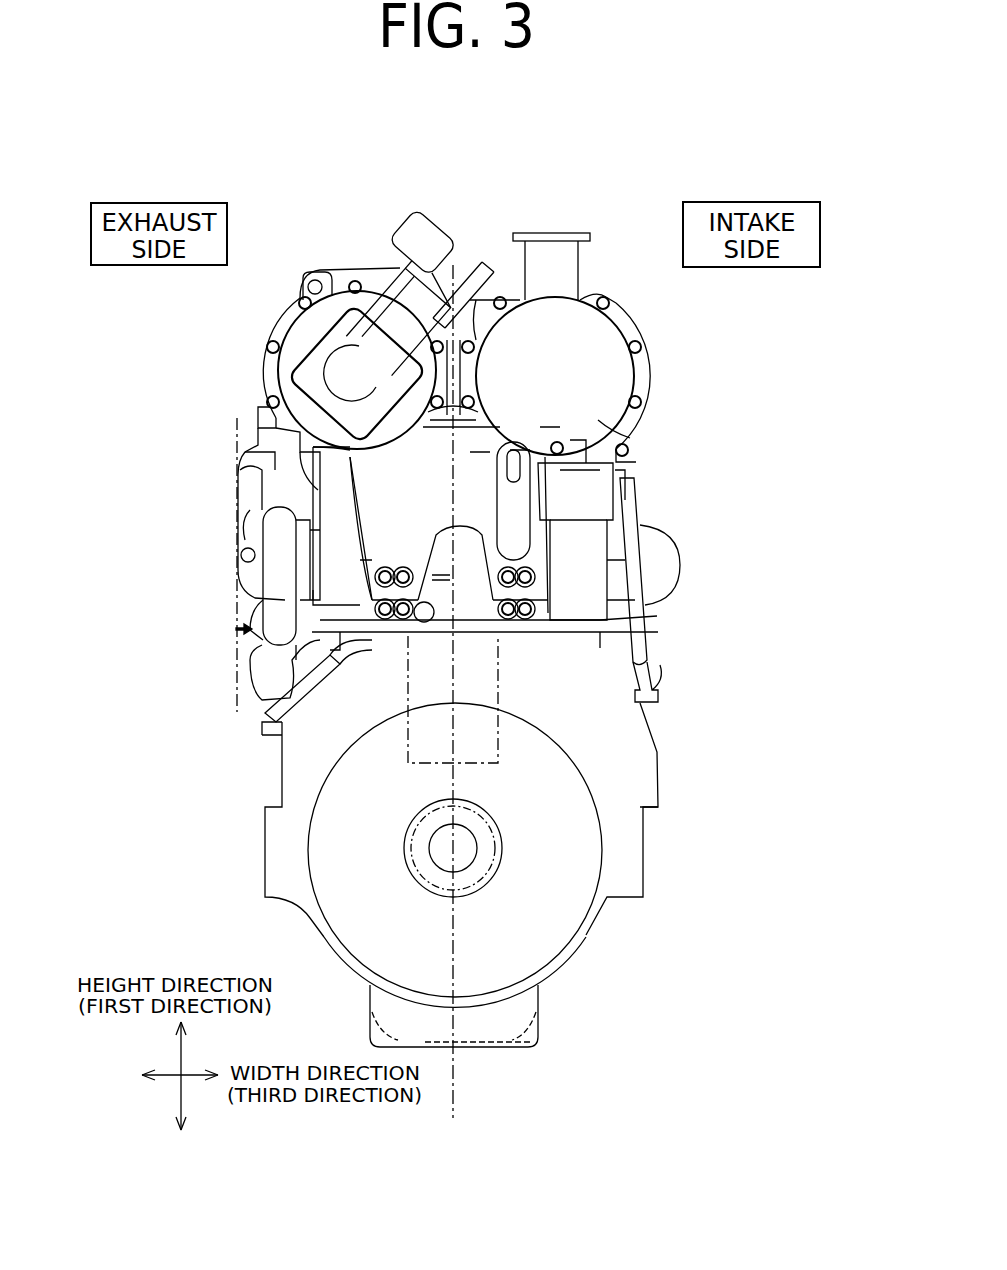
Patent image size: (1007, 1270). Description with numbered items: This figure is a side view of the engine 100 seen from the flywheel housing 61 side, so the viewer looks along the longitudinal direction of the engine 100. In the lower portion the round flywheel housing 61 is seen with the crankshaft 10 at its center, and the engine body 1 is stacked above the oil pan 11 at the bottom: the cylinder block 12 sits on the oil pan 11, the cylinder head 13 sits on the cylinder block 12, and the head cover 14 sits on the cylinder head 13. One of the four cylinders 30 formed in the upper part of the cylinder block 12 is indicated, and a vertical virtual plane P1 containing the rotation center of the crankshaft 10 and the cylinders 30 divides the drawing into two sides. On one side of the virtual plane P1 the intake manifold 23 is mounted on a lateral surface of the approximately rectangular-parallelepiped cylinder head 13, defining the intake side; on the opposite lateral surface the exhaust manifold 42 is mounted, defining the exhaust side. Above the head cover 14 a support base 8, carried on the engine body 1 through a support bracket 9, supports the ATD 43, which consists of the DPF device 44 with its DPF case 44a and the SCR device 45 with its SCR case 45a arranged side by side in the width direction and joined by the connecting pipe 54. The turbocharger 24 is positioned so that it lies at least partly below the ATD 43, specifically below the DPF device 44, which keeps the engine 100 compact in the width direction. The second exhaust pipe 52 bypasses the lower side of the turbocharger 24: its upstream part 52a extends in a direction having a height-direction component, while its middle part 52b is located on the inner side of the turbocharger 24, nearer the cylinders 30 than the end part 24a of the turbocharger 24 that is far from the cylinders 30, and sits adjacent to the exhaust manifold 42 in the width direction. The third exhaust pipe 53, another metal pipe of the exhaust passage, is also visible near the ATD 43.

The engine 100 is at (671, 192).
The engine body 1 is at (664, 976).
The support base 8 is at (237, 428).
The support bracket 9 is at (487, 446).
The crankshaft 10 is at (440, 852).
The oil pan 11 is at (370, 1006).
The cylinder block 12 is at (282, 775).
The cylinder head 13 is at (478, 655).
The head cover 14 is at (478, 525).
The intake manifold 23 is at (640, 594).
The turbocharger 24 is at (241, 484).
The end part 24a is at (250, 534).
The cylinder 30 is at (498, 706).
The exhaust manifold 42 is at (334, 662).
The ATD (exhaust gas purification device) 43 is at (457, 224).
The DPF device 44 is at (300, 324).
The DPF case 44a is at (290, 358).
The SCR device 45 is at (612, 374).
The SCR case 45a is at (612, 408).
The second exhaust pipe (connection pipe) 52 is at (258, 556).
The upstream part 52a is at (266, 592).
The middle part (straight part) 52b is at (265, 606).
The third exhaust pipe 53 is at (572, 264).
The connecting pipe 54 is at (405, 266).
The flywheel housing 61 is at (322, 956).
The virtual plane P1 is at (456, 1100).